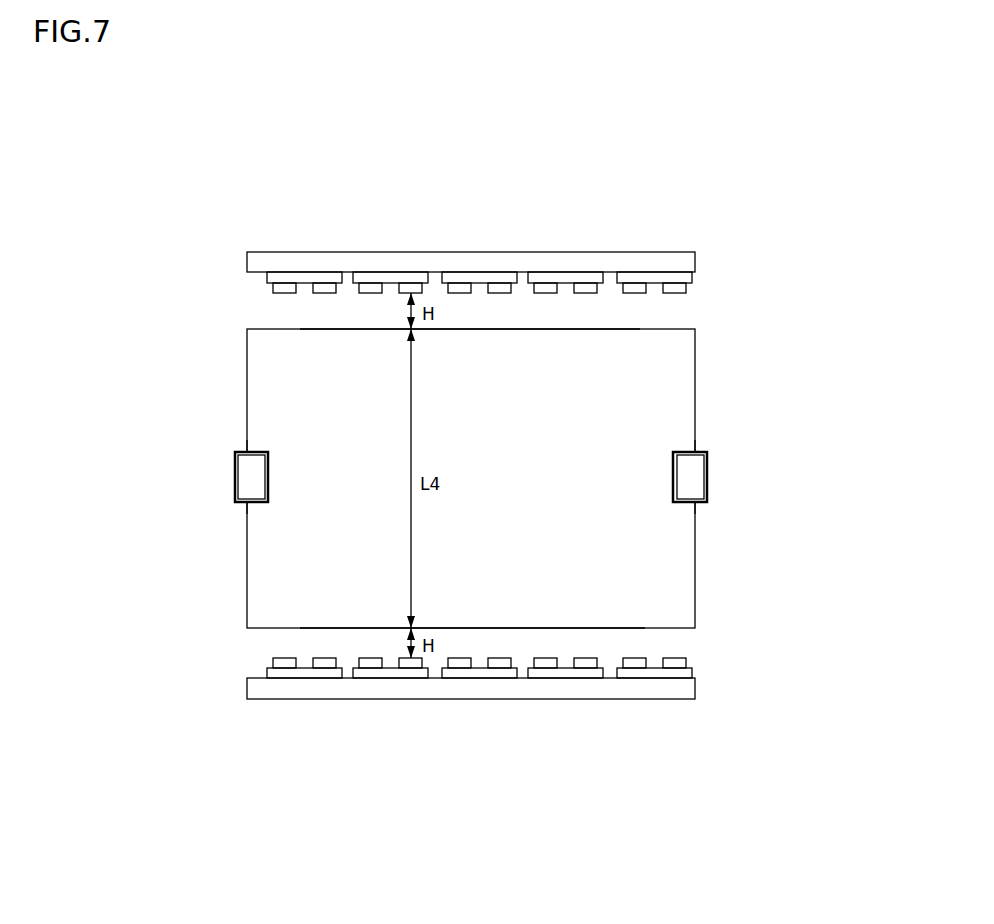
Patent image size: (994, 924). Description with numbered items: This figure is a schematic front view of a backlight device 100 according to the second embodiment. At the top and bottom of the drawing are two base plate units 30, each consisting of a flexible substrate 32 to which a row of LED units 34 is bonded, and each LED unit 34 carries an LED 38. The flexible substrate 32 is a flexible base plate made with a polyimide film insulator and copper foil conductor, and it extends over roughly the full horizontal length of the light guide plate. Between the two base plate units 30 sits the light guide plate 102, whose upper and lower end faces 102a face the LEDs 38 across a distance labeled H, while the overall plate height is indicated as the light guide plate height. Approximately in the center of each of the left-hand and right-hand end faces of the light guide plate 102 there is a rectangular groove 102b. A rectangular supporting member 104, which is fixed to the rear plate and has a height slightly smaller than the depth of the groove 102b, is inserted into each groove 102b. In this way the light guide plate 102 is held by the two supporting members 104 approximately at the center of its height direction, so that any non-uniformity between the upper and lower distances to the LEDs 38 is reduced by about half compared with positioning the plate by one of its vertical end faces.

The backlight device 100 is at (733, 203).
The base plate unit 30 is at (280, 246).
The flexible substrate 32 is at (607, 252).
The LED unit 34 is at (265, 277).
The LED 38 is at (325, 293).
The light guide plate 102 is at (695, 388).
The end face 102a is at (641, 329).
The groove 102b is at (265, 478).
The supporting member 104 is at (235, 457).